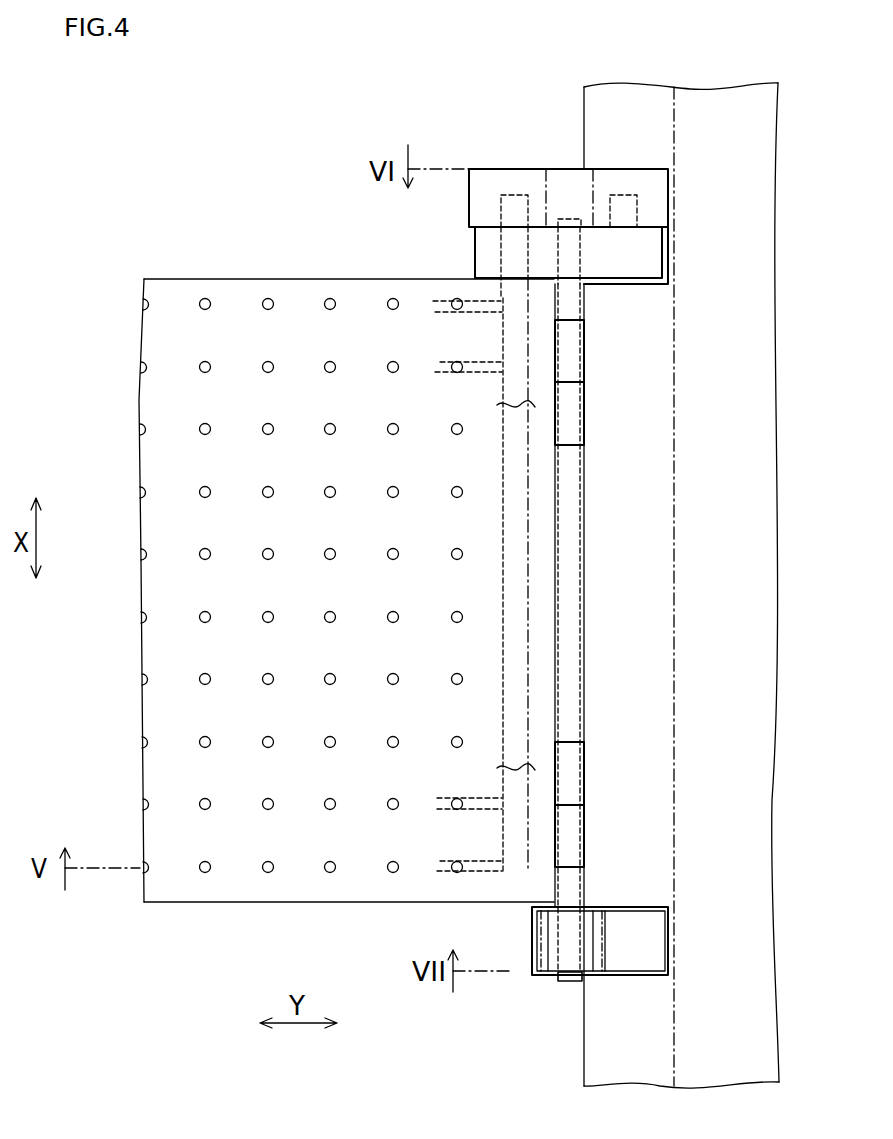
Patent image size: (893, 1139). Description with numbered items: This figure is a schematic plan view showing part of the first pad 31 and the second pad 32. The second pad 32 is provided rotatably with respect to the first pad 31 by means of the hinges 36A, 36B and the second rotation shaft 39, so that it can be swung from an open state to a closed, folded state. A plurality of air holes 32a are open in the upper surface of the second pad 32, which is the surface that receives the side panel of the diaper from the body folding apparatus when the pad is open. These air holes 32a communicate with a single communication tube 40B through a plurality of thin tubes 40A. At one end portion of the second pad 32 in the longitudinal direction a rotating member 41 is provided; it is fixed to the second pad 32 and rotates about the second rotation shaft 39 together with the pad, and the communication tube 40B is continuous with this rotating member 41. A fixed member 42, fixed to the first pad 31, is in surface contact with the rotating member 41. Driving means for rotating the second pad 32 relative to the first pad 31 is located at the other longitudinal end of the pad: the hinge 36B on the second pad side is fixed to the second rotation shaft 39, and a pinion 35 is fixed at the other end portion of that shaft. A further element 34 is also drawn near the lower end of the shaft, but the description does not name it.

The first pad 31 is at (614, 101).
The second pad 32 is at (160, 525).
The air holes 32a is at (330, 361).
The lower bracket 34 is at (648, 942).
The pinion 35 is at (551, 965).
The hinge 36A is at (570, 356).
The hinge 36B is at (572, 418).
The second rotation shaft 39 is at (566, 560).
The thin tubes 40A is at (450, 362).
The communication tube 40B is at (503, 345).
The rotating member 41 is at (648, 256).
The fixed member 42 is at (510, 183).